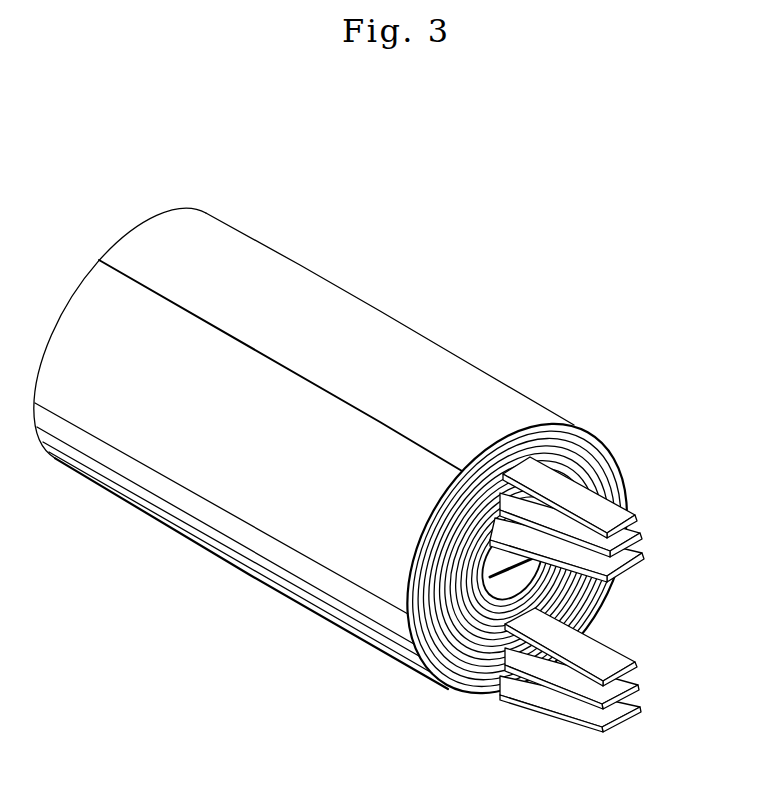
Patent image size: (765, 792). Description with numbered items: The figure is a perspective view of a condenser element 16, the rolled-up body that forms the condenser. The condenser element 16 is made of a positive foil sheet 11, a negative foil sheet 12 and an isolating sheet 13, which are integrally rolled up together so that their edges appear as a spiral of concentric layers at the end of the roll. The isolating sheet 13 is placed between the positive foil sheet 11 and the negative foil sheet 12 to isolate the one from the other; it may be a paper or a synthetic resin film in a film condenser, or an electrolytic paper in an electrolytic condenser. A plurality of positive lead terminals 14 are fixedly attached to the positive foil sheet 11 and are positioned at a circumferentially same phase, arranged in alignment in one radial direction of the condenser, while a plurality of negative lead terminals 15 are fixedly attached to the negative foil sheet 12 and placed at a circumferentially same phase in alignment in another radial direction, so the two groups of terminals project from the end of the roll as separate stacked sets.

The positive foil sheet 11 is at (516, 526).
The negative foil sheet 12 is at (582, 448).
The isolating sheet 13 is at (593, 462).
The positive lead terminals 14 is at (640, 553).
The negative lead terminals 15 is at (637, 712).
The condenser element 16 is at (362, 292).